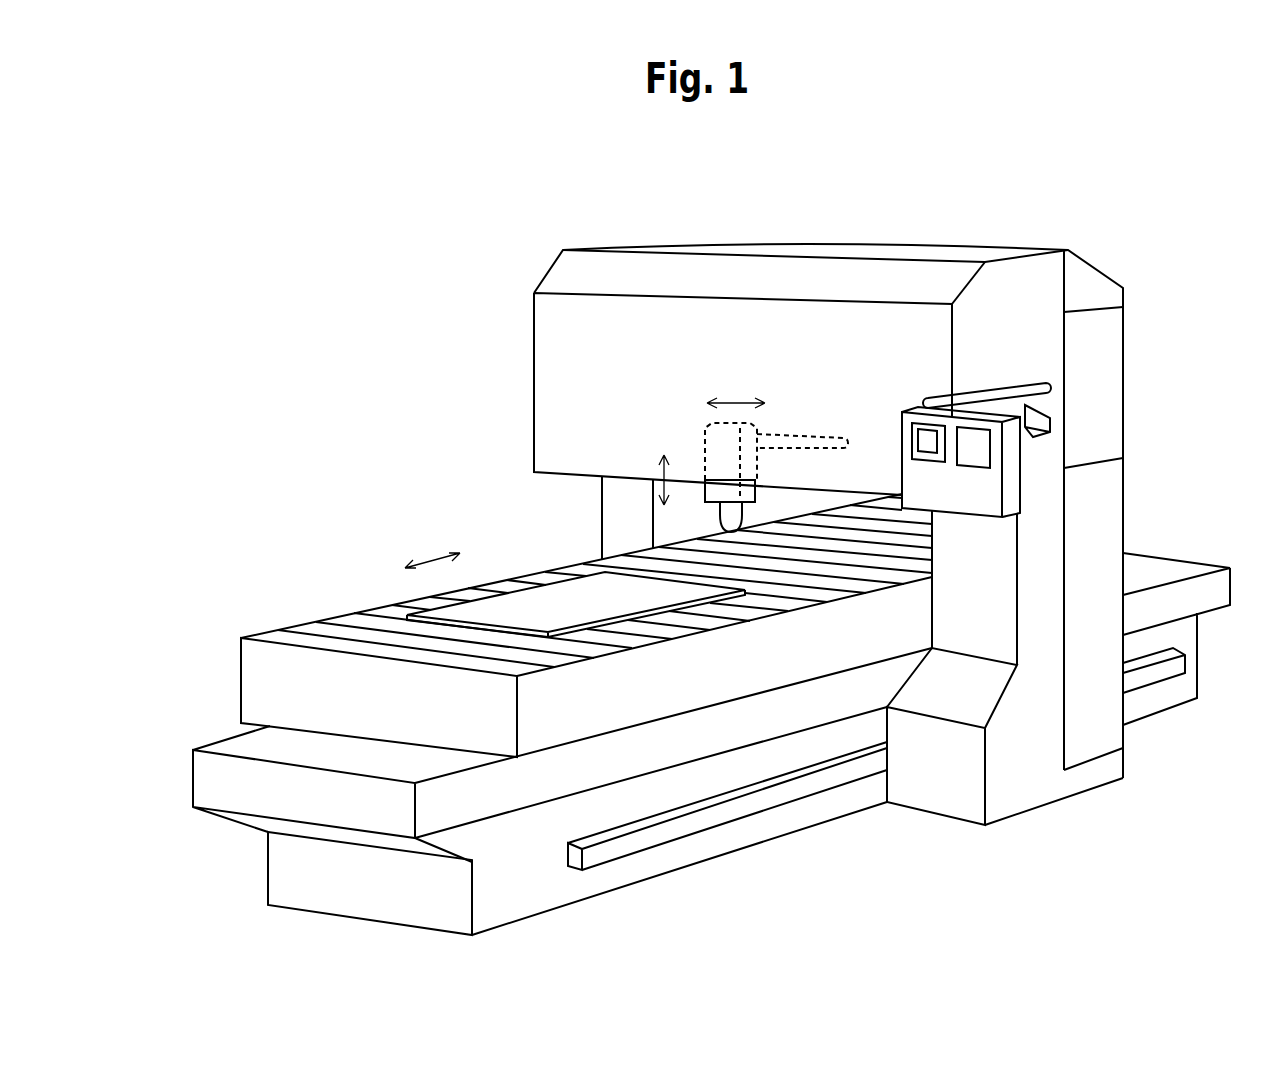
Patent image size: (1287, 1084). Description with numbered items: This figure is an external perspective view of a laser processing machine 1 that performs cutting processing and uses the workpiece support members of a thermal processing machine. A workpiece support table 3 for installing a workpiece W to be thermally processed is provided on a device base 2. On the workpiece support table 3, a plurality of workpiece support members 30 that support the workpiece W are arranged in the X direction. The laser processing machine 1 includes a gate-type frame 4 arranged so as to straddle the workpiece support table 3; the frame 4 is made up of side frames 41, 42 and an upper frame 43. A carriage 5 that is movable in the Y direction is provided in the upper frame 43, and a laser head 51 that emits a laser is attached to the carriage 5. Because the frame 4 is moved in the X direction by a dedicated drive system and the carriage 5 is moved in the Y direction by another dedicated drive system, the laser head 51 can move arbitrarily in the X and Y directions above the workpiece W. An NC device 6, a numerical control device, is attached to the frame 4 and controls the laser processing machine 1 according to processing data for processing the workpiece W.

The laser processing machine 1 is at (836, 233).
The device base 2 is at (662, 865).
The workpiece support table 3 is at (247, 680).
The workpiece support member 30 is at (305, 637).
The gate-type frame 4 is at (1125, 338).
The side frame 41 is at (1125, 490).
The side frame 42 is at (602, 503).
The upper frame 43 is at (543, 370).
The carriage 5 is at (705, 442).
The laser head 51 is at (735, 517).
The NC device 6 is at (972, 508).
The workpiece W is at (497, 607).